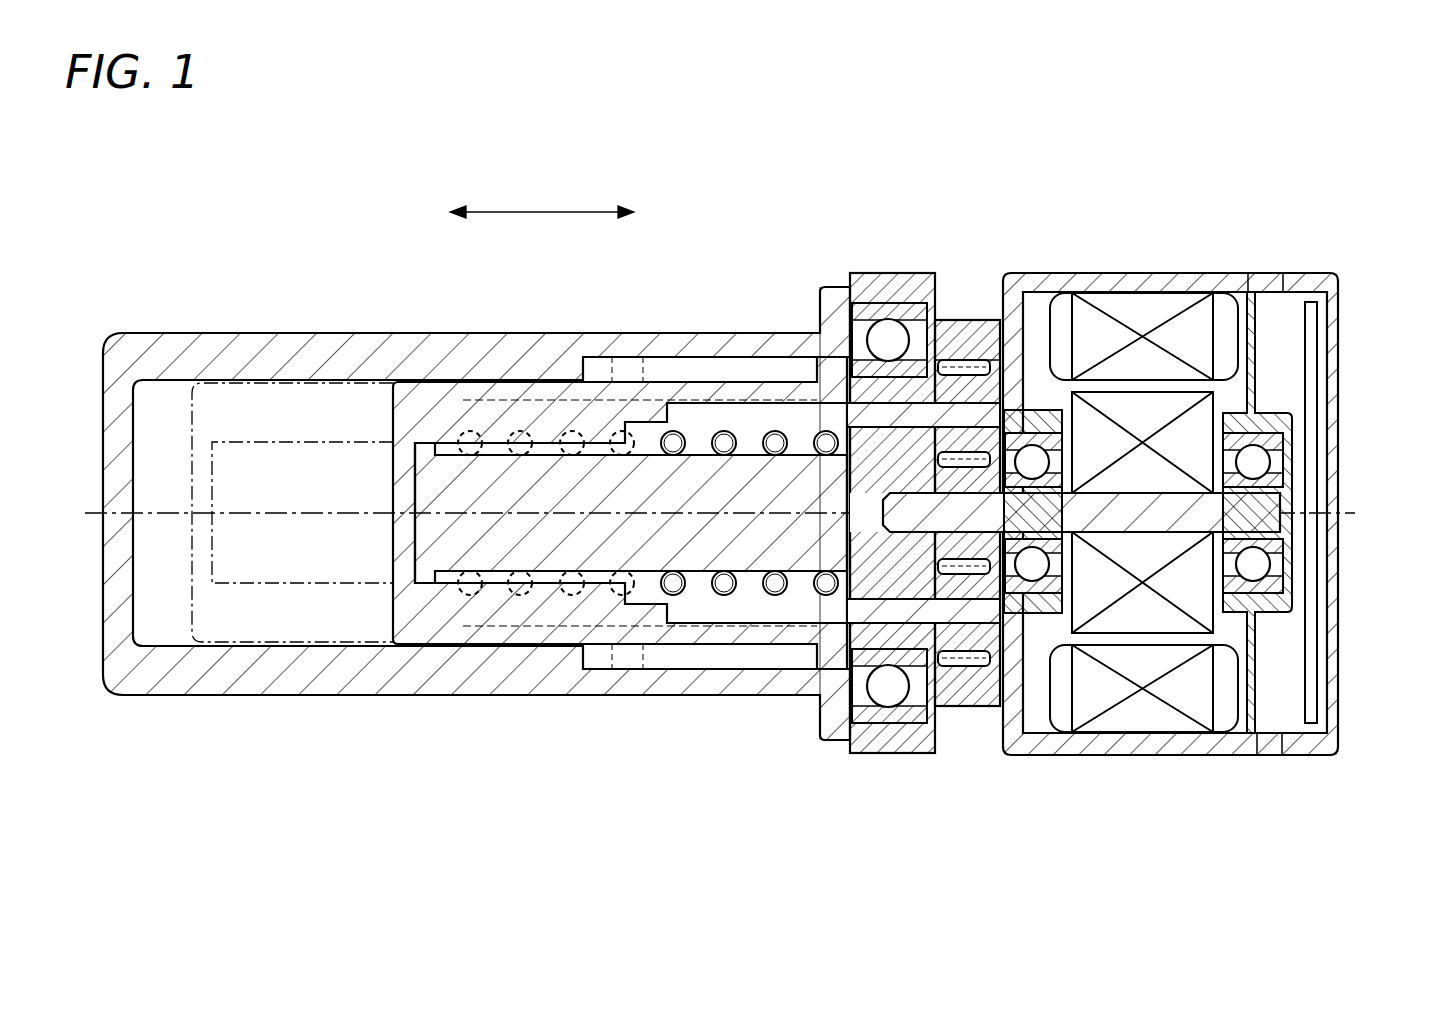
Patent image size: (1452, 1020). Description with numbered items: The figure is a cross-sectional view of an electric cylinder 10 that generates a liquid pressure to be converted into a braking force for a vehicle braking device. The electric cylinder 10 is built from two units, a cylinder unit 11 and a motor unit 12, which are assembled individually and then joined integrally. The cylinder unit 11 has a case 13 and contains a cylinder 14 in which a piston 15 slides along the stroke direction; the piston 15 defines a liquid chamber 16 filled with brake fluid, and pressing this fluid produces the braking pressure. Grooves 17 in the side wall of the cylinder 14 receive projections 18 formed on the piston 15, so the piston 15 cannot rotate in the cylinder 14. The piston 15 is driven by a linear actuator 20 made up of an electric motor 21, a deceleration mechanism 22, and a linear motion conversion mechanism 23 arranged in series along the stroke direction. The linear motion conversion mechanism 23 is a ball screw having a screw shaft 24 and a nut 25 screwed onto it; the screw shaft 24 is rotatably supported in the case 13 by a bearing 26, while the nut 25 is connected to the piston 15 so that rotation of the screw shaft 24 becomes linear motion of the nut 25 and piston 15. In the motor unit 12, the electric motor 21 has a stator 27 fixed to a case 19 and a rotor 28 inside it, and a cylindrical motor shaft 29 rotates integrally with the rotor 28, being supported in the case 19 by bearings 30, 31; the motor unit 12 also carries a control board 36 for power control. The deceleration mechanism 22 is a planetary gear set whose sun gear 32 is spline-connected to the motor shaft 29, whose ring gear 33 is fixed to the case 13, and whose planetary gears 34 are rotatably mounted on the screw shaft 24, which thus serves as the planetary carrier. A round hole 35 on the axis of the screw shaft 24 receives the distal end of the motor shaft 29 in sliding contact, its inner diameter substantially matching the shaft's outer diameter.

The electric cylinder 10 is at (262, 200).
The cylinder unit 11 is at (246, 697).
The motor unit 12 is at (1179, 756).
The case 13 is at (398, 667).
The cylinder 14 is at (320, 385).
The piston 15 is at (508, 392).
The liquid chamber 16 is at (282, 502).
The grooves 17 is at (667, 670).
The projections 18 is at (808, 683).
The case 19 is at (1044, 280).
The linear actuator 20 is at (697, 400).
The electric motor 21 is at (1145, 613).
The deceleration mechanism 22 is at (980, 690).
The linear motion conversion mechanism 23 is at (700, 565).
The screw shaft 24 is at (598, 562).
The nut 25 is at (740, 420).
The bearing 26 is at (888, 690).
The stator 27 is at (1130, 310).
The rotor 28 is at (1160, 410).
The motor shaft 29 is at (1110, 522).
The bearing 30 is at (1032, 567).
The bearing 31 is at (1252, 570).
The sun gear 32 is at (935, 540).
The ring gear 33 is at (966, 336).
The planetary gears 34 is at (950, 445).
The hole 35 is at (883, 505).
The control board 36 is at (1312, 308).